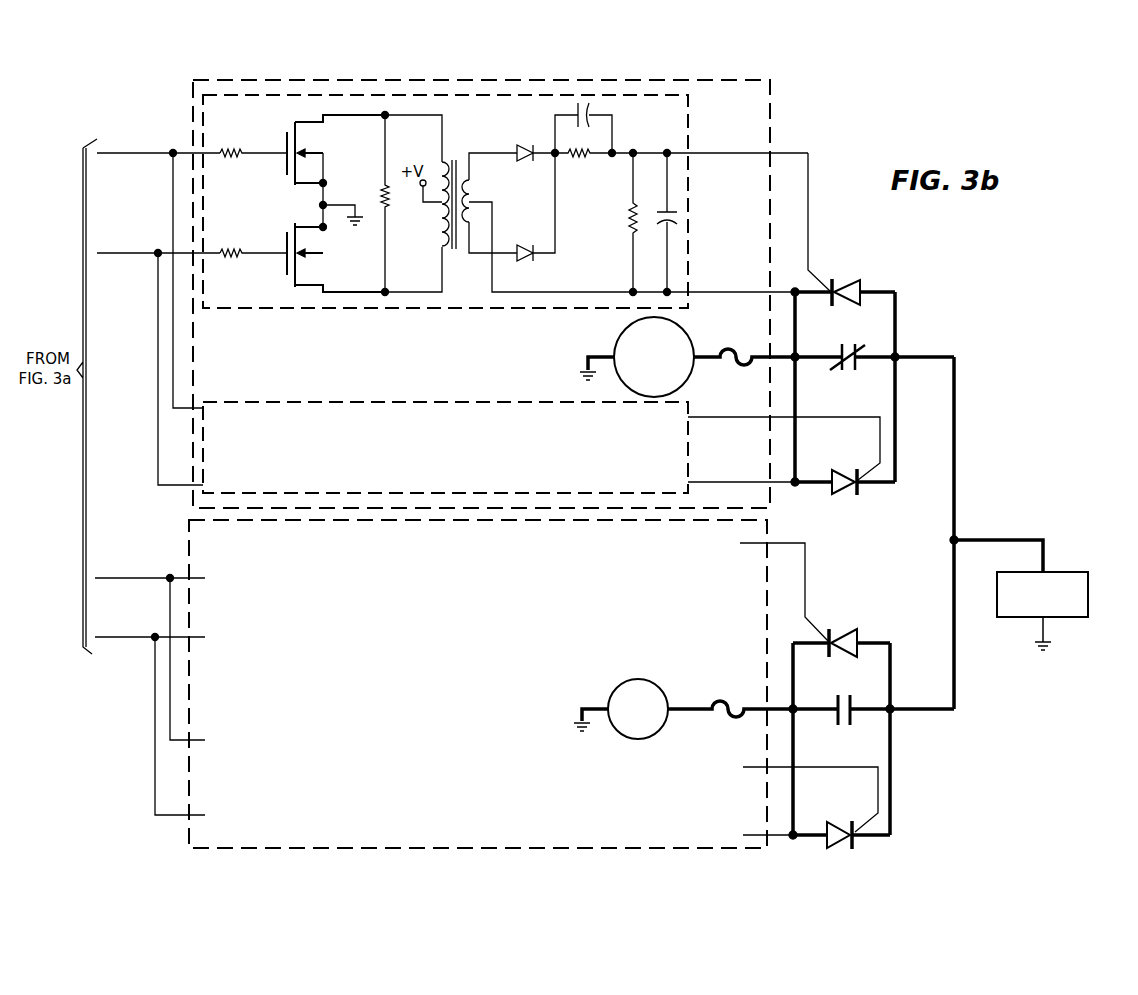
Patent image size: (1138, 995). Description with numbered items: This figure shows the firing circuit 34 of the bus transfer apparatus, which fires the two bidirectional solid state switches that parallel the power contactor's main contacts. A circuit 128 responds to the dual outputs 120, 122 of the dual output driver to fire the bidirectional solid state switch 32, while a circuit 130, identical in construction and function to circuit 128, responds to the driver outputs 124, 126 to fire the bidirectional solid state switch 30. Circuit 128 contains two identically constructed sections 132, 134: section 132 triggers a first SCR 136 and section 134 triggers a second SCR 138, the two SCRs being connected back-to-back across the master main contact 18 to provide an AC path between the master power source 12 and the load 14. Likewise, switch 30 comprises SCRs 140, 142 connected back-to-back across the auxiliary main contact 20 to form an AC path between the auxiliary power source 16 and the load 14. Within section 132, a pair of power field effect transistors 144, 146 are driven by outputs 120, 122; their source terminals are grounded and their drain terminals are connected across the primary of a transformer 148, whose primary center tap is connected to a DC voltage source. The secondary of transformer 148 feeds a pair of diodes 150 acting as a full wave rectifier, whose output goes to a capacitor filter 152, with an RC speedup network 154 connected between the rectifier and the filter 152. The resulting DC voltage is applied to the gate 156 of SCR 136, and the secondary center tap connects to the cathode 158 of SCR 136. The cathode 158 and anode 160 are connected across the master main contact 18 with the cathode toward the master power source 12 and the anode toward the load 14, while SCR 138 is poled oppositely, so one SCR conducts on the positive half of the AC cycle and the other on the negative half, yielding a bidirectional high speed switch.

The master power source 12 is at (621, 338).
The load 14 is at (1089, 616).
The auxiliary power source 16 is at (613, 686).
The master main contact 18 is at (854, 366).
The auxiliary main contact 20 is at (852, 720).
The bidirectional solid state switch 30 is at (871, 716).
The bidirectional solid state switch 32 is at (880, 383).
The firing circuit 34 is at (841, 112).
The driver output 120 is at (125, 155).
The driver output 122 is at (128, 255).
The drive signal line 124 is at (130, 580).
The drive signal line 126 is at (115, 640).
The firing circuit 128 is at (726, 112).
The firing circuit 130 is at (673, 562).
The firing circuit section 132 is at (644, 129).
The firing circuit section 134 is at (619, 451).
The first SCR 136 is at (872, 275).
The second SCR 138 is at (838, 497).
The SCR 140 is at (854, 628).
The SCR 142 is at (843, 824).
The power field effect transistor 144 is at (323, 151).
The power field effect transistor 146 is at (323, 256).
The transformer 148 is at (474, 145).
The pair of diodes 150 is at (528, 165).
The capacitor filter 152 is at (672, 240).
The RC speedup network 154 is at (582, 163).
The gate 156 is at (818, 270).
The cathode 158 is at (812, 298).
The anode 160 is at (873, 298).